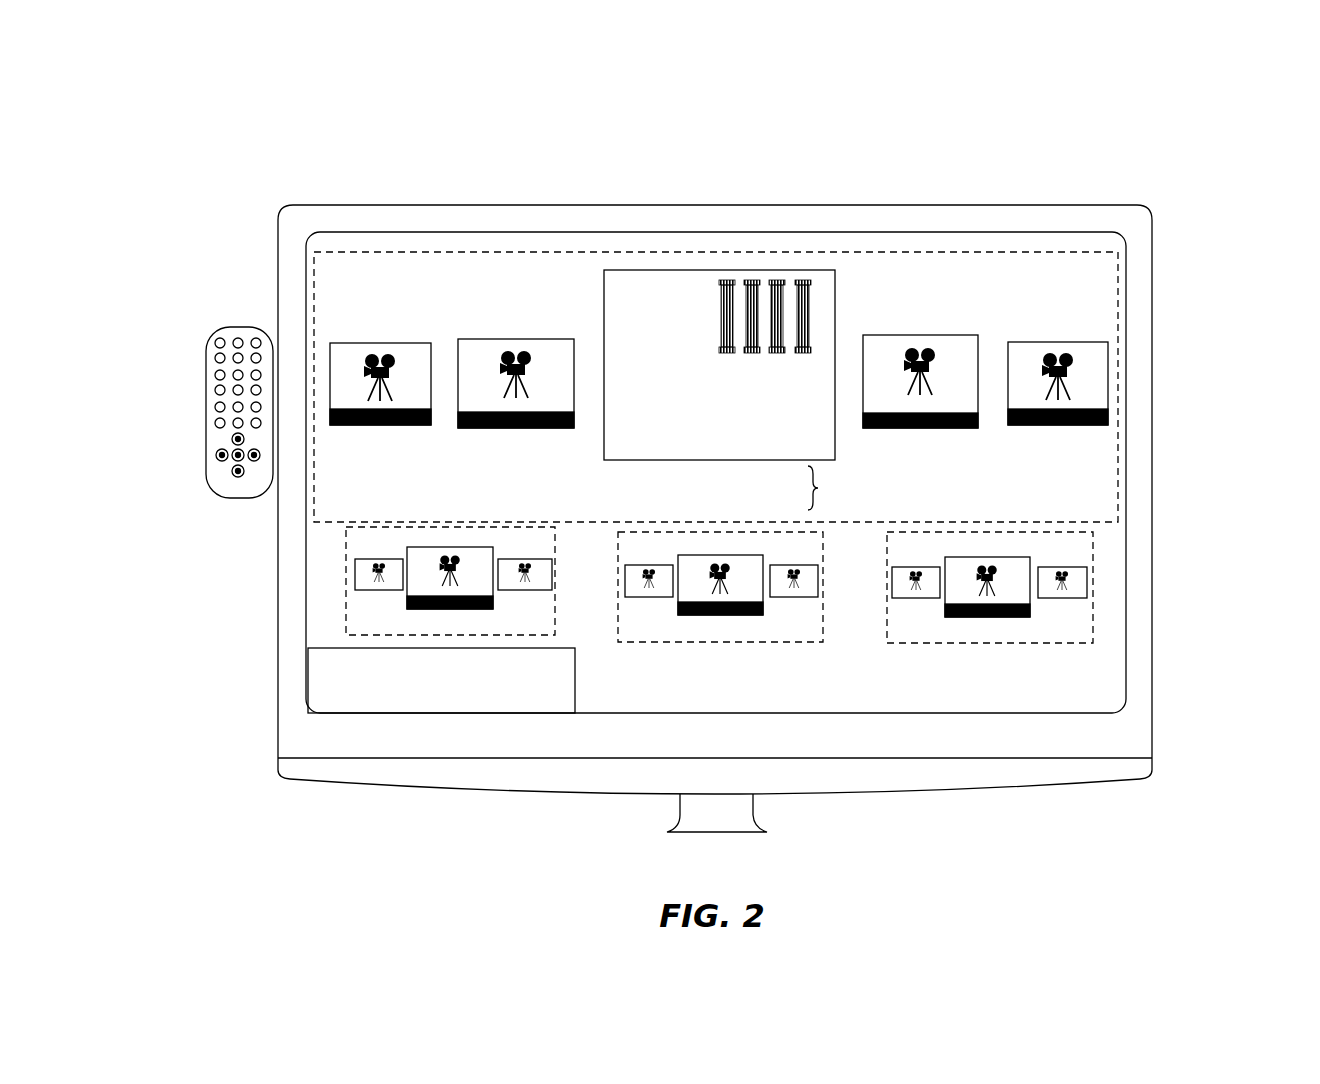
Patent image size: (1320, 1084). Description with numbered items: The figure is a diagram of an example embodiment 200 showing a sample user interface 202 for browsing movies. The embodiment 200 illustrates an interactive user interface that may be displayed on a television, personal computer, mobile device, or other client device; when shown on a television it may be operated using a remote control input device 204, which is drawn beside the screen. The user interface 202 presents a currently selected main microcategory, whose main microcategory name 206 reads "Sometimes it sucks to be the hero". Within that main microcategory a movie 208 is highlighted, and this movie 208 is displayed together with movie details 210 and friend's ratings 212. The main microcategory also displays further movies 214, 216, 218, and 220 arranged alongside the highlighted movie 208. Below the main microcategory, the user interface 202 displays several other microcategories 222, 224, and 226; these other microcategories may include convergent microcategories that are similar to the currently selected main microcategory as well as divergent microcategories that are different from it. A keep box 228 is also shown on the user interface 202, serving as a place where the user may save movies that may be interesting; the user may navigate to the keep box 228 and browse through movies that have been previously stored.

The example embodiment 200 is at (256, 213).
The user interface 202 is at (1152, 633).
The remote control input device 204 is at (223, 497).
The main microcategory name 206 is at (1118, 300).
The movie 208 is at (712, 268).
The movie details 210 is at (835, 437).
The friend's ratings 212 is at (817, 488).
The movie 214 is at (330, 385).
The movie 216 is at (573, 337).
The movie 218 is at (917, 335).
The movie 220 is at (1057, 342).
The microcategory 222 is at (346, 598).
The microcategory 224 is at (640, 641).
The microcategory 226 is at (892, 643).
The keep box 228 is at (320, 710).